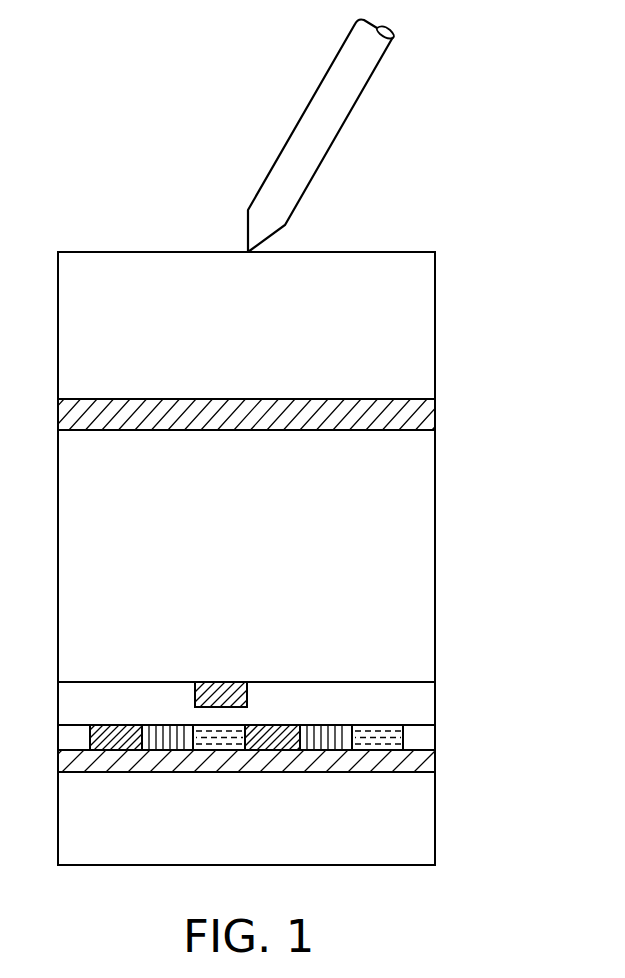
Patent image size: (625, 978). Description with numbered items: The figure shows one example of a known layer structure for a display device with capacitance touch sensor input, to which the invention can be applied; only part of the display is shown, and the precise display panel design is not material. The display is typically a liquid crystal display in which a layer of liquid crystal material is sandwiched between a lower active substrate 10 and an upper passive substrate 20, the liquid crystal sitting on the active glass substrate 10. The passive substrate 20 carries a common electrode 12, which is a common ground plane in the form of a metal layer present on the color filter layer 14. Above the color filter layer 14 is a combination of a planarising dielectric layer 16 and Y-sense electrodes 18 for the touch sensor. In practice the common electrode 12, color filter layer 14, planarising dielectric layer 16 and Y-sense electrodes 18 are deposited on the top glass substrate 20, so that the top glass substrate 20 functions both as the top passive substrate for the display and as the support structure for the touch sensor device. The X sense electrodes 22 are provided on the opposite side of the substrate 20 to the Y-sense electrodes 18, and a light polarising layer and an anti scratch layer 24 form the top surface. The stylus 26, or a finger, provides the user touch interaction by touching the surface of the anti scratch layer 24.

The lower active substrate 10 is at (437, 814).
The common electrode 12 is at (437, 756).
The color filter layer 14 is at (437, 736).
The planarising dielectric layer 16 is at (437, 697).
The Y-sense electrodes 18 is at (228, 690).
The upper passive substrate 20 is at (437, 465).
The X sense electrodes 22 is at (437, 412).
The anti scratch layer 24 is at (437, 319).
The stylus 26 is at (304, 112).